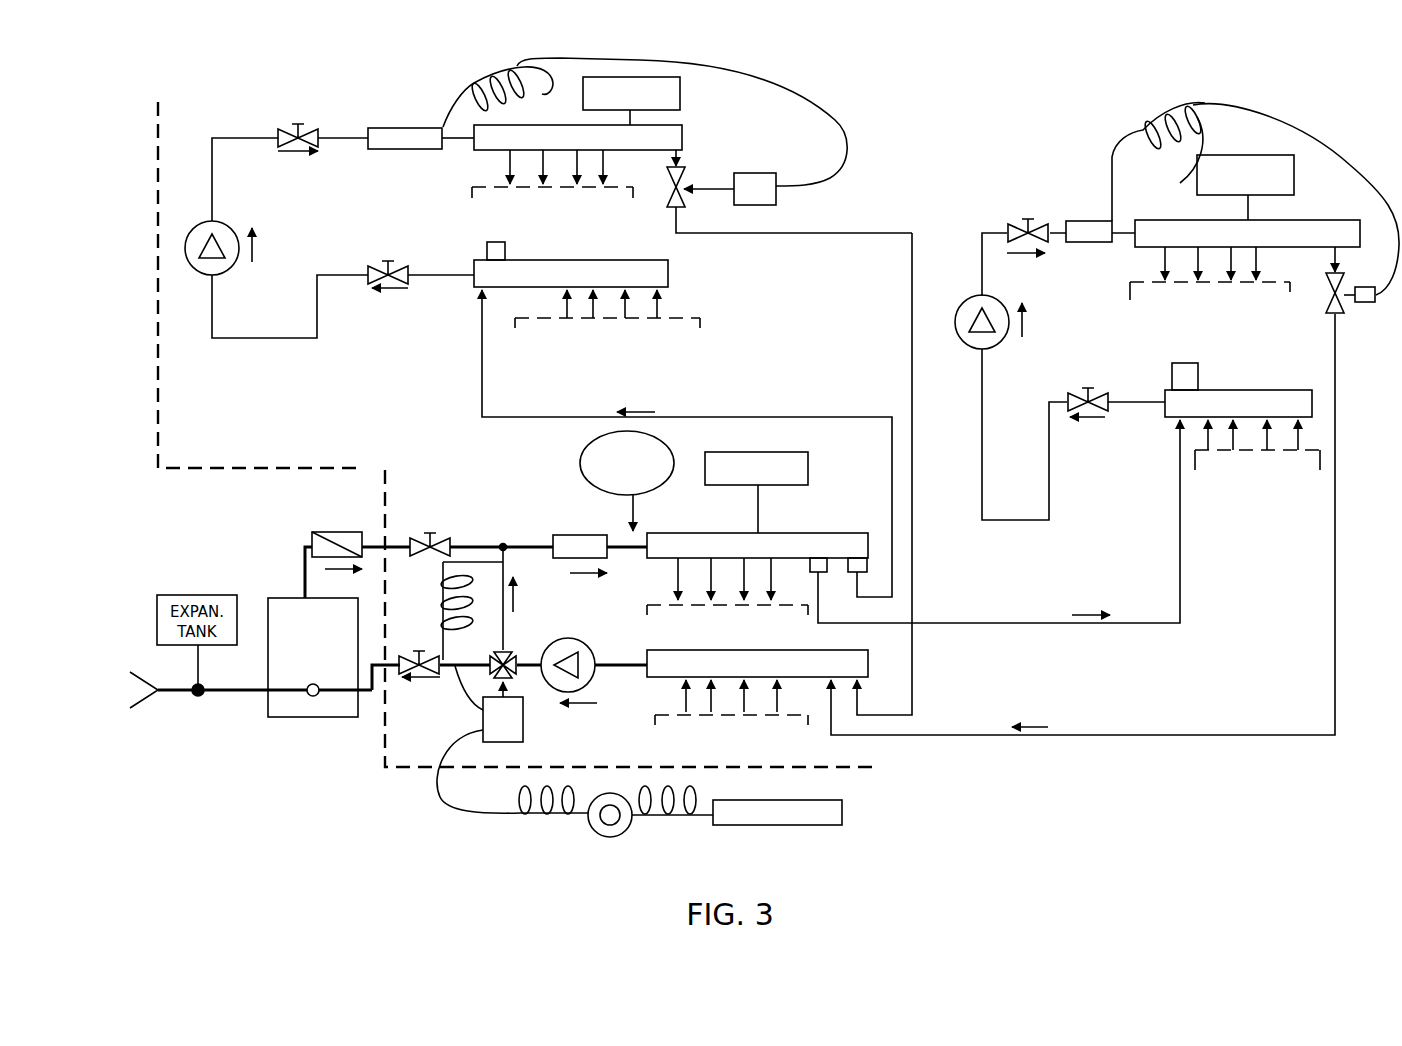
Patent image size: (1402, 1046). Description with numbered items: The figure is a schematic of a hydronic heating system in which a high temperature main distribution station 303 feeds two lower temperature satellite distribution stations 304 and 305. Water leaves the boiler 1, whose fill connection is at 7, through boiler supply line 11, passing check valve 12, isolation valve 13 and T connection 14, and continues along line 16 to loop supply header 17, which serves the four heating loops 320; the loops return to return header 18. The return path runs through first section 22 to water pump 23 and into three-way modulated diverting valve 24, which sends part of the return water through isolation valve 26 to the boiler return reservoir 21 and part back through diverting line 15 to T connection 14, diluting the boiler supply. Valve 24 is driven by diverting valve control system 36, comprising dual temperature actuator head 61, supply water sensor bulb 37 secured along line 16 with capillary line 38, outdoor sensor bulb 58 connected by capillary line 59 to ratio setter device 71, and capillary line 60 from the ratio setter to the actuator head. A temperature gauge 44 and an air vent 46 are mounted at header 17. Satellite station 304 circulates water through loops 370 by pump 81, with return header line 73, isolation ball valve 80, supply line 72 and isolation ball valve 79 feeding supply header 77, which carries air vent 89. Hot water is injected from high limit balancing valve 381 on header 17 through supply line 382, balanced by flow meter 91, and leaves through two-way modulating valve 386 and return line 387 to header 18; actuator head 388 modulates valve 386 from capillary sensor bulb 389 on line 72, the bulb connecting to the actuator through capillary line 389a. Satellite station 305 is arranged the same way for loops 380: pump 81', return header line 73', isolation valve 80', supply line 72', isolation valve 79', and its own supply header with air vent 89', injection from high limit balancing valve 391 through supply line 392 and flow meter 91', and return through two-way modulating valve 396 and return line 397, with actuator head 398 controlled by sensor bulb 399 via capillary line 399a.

The boiler 1 is at (305, 717).
The boiler fill line 7 is at (160, 690).
The boiler supply line 11 is at (304, 533).
The check valve 12 is at (330, 531).
The isolation valve 13 is at (437, 534).
The T connection 14 is at (503, 545).
The diverting line 15 is at (504, 625).
The continuation of supply line 16 is at (537, 546).
The loop supply header 17 is at (742, 533).
The return header 18 is at (805, 650).
The boiler return reservoir 21 is at (312, 684).
The first section 22 is at (608, 664).
The water pump 23 is at (578, 640).
The three-way modulated diverting valve 24 is at (514, 673).
The isolation valve 26 is at (419, 651).
The diverting valve control system 36 is at (564, 758).
The supply header water temperature thermal sensor bulb 37 is at (562, 535).
The capillary line 38 is at (448, 606).
The temperature gauge 44 is at (585, 455).
The air vent 46 is at (740, 452).
The outdoor ambient temperature thermal sensor bulb 58 is at (784, 801).
The capillary line 59 is at (690, 789).
The capillary line 60 is at (520, 801).
The dual temperature actuator head 61 is at (523, 740).
The ratio setter device 71 is at (606, 806).
The supply line 72 is at (223, 179).
The return header line 73 is at (561, 286).
The supply header 77 is at (684, 137).
The isolation ball valve 79 is at (310, 121).
The isolation ball valve 80 is at (379, 253).
The pump 81 is at (210, 265).
The air vent 89 is at (664, 97).
The flow meter 91 is at (517, 241).
The main distribution station 303 is at (383, 764).
The satellite distribution station 304 is at (250, 120).
The satellite distribution station 305 is at (1087, 168).
The heating loops 320 is at (1083, 562).
The loops 370 is at (664, 237).
The loops 380 is at (1048, 521).
The high limit balancing valve 381 is at (858, 557).
The supply line 382 is at (804, 417).
The two-way modulating valve 386 is at (682, 176).
The return line 387 is at (913, 680).
The thermostatic actuator head 388 is at (776, 201).
The capillary sensor bulb 389 is at (412, 127).
The sensor lead 389a is at (508, 97).
The high limit balancing valve 391 is at (819, 557).
The supply line 392 is at (970, 623).
The two-way modulating valve 396 is at (1346, 304).
The return line 397 is at (1130, 735).
The thermostatic actuator head 398 is at (1355, 287).
The capillary sensor bulb 399 is at (1098, 220).
The capillary line 399a is at (1158, 162).
The supply line 72' is at (963, 248).
The return header line 73' is at (1212, 423).
The isolation valve 79' is at (1023, 217).
The isolation valve 80' is at (1071, 384).
The pump 81' is at (972, 303).
The air vent 89' is at (1245, 173).
The flow meter 91' is at (1209, 366).